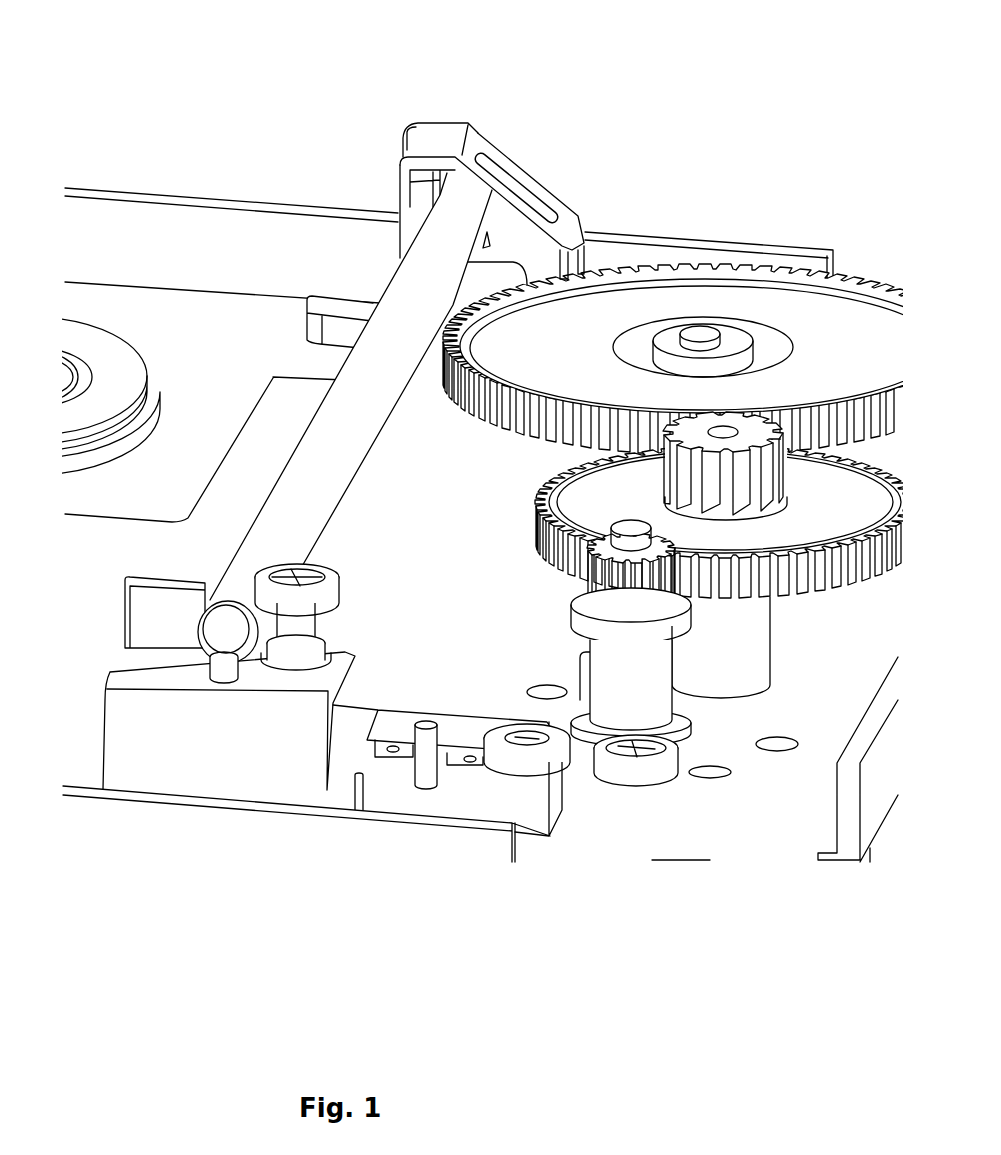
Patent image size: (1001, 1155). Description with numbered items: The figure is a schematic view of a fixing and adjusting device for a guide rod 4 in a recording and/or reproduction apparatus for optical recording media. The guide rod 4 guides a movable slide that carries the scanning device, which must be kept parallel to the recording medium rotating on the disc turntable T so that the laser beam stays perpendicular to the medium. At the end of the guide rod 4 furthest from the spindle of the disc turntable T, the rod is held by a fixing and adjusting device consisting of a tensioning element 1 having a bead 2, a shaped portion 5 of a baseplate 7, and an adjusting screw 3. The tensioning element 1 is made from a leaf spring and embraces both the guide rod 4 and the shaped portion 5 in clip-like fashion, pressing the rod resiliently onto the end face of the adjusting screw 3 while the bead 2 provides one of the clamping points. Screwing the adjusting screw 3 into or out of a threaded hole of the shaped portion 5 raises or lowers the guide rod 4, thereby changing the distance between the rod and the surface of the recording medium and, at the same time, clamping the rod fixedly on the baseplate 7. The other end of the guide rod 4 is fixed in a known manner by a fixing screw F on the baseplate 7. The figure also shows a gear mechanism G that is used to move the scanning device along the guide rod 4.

The tensioning element 1 is at (440, 133).
The bead 2 is at (517, 182).
The adjusting screw 3 is at (490, 243).
The guide rod 4 is at (405, 300).
The shaped portion 5 is at (413, 217).
The baseplate 7 is at (287, 413).
The gear mechanism G is at (826, 500).
The disc turntable T is at (87, 340).
The fixing screw F is at (226, 600).